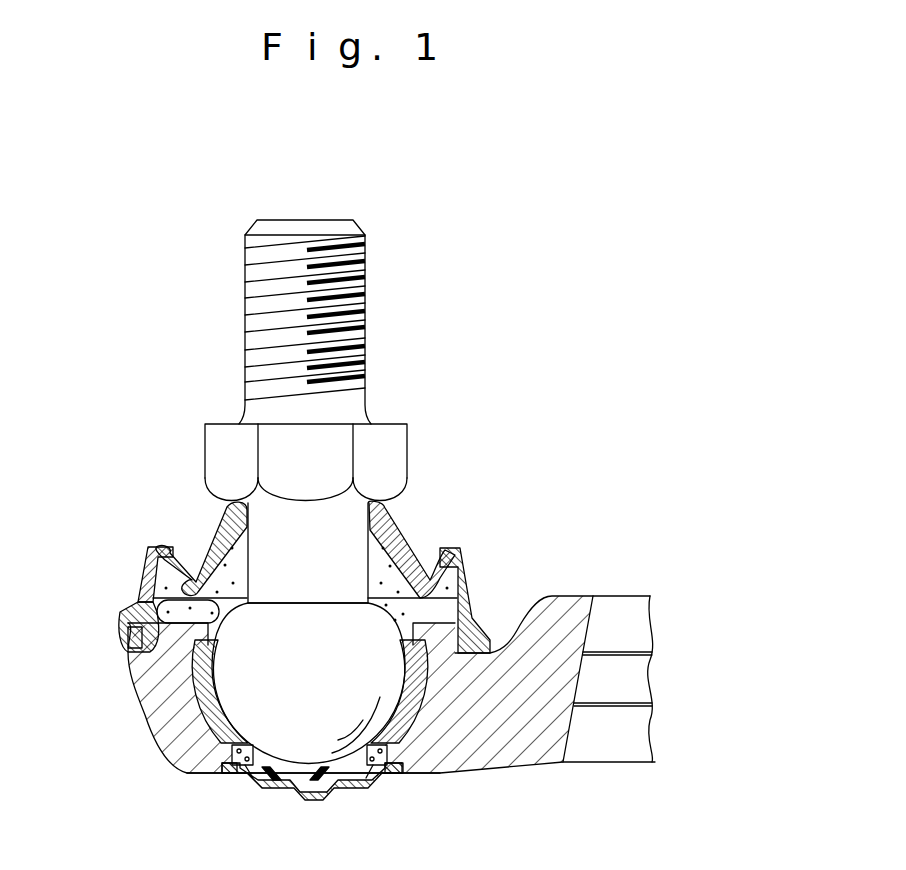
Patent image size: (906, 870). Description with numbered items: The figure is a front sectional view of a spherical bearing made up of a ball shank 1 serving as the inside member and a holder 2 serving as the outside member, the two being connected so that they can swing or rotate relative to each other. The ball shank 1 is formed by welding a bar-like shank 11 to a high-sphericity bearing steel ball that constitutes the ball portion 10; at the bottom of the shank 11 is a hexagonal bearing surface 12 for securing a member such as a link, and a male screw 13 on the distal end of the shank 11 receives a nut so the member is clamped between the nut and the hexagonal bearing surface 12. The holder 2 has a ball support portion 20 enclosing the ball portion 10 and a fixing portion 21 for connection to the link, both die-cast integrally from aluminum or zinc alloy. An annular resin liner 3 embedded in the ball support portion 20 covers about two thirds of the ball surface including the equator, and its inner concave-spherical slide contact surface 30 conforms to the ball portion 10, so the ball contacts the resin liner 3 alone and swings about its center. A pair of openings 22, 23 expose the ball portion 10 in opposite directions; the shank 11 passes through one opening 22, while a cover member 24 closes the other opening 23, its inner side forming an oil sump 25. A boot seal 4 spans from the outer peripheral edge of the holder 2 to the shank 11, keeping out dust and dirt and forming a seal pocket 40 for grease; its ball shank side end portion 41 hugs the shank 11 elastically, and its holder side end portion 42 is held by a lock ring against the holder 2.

The ball shank 1 is at (378, 246).
The holder 2 is at (150, 752).
The resin liner 3 is at (430, 680).
The boot seal 4 is at (470, 542).
The ball portion 10 is at (425, 695).
The shank 11 is at (345, 543).
The hexagonal bearing surface 12 is at (392, 447).
The male screw 13 is at (355, 290).
The ball support portion 20 is at (145, 700).
The fixing portion 21 is at (565, 600).
The opening 22 is at (150, 600).
The opening 23 is at (376, 772).
The cover member 24 is at (305, 800).
The oil sump 25 is at (237, 760).
The slide contact surface 30 is at (205, 670).
The seal pocket 40 is at (477, 593).
The ball shank side end portion 41 is at (225, 508).
The holder side end portion 42 is at (118, 630).